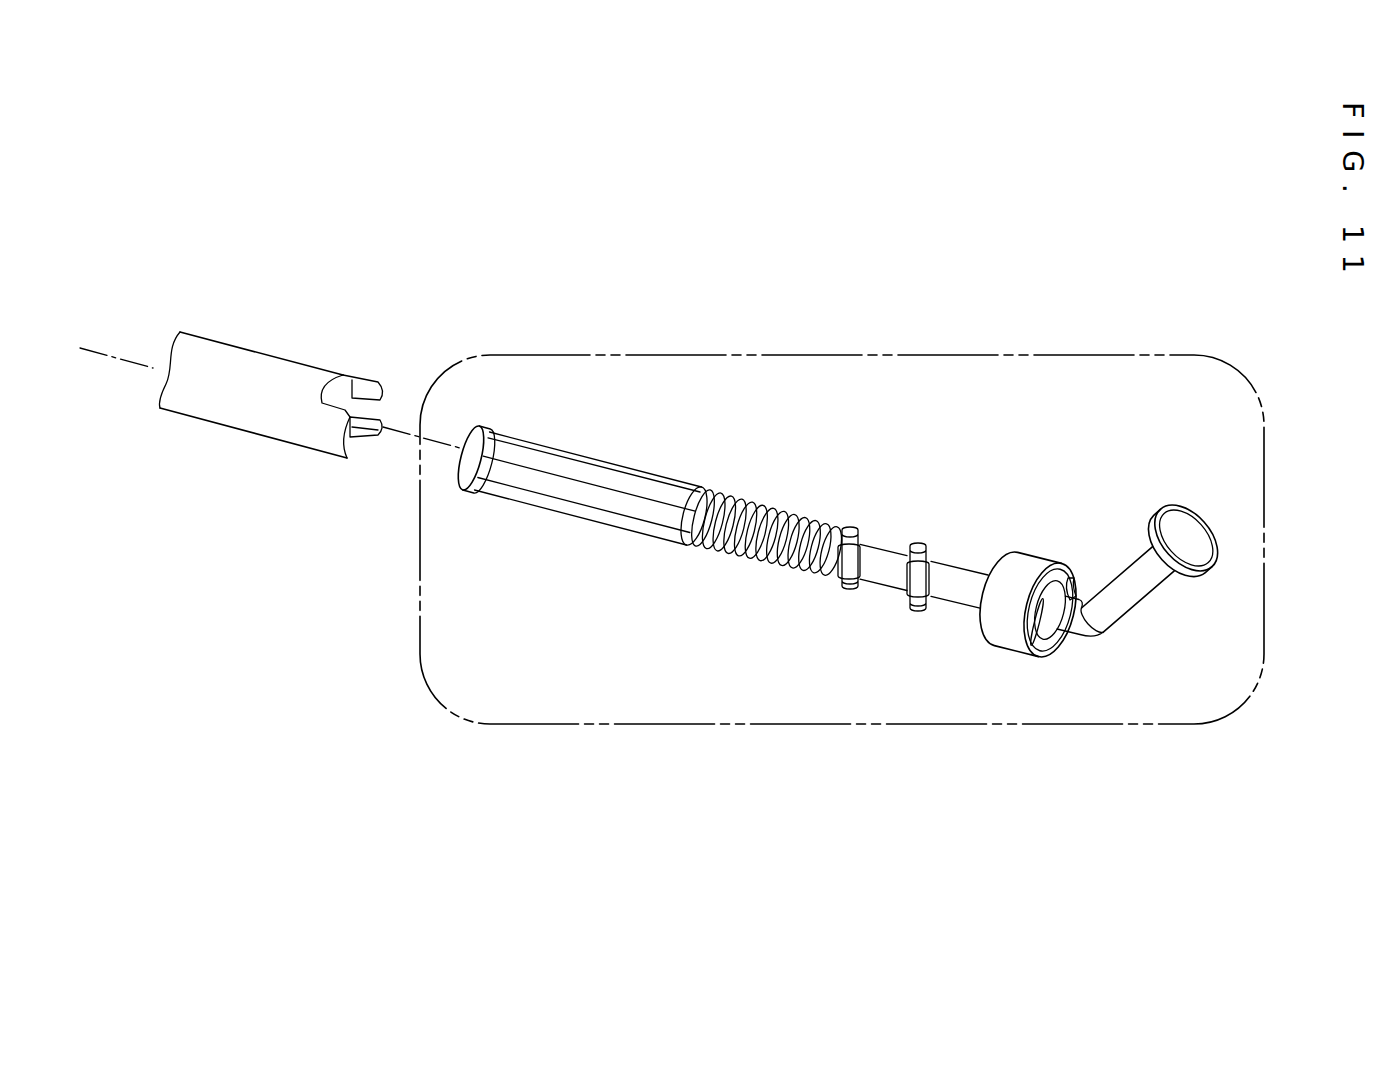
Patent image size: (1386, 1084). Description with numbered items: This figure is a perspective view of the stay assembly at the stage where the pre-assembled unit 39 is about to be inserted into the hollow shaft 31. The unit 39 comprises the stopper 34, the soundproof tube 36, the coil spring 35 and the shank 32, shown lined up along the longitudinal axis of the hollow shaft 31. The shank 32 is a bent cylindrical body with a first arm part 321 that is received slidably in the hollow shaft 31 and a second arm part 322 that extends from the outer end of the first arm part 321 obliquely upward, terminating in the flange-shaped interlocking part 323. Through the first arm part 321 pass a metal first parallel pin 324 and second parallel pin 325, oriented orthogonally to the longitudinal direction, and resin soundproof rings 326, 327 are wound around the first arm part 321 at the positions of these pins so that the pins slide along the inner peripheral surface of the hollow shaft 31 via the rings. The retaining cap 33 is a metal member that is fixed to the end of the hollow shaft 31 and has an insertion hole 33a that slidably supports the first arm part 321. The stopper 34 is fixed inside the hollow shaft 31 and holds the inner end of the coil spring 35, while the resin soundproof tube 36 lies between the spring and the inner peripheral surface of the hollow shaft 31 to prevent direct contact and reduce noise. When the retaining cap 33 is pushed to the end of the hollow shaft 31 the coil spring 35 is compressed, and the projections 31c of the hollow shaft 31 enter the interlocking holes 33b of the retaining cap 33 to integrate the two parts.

The hollow shaft 31 is at (247, 363).
The projections 31c is at (363, 387).
The shank 32 is at (1107, 633).
The first arm part 321 is at (950, 593).
The second arm part 322 is at (1146, 580).
The interlocking part 323 is at (1183, 533).
The first parallel pin 324 is at (853, 540).
The second parallel pin 325 is at (926, 560).
The soundproof ring 326 is at (852, 562).
The soundproof ring 327 is at (911, 581).
The retaining cap 33 is at (1030, 565).
The insertion hole 33a is at (1052, 623).
The interlocking holes 33b is at (1077, 580).
The stopper 34 is at (487, 437).
The coil spring 35 is at (757, 507).
The soundproof tube 36 is at (613, 472).
The unit 39 is at (862, 354).